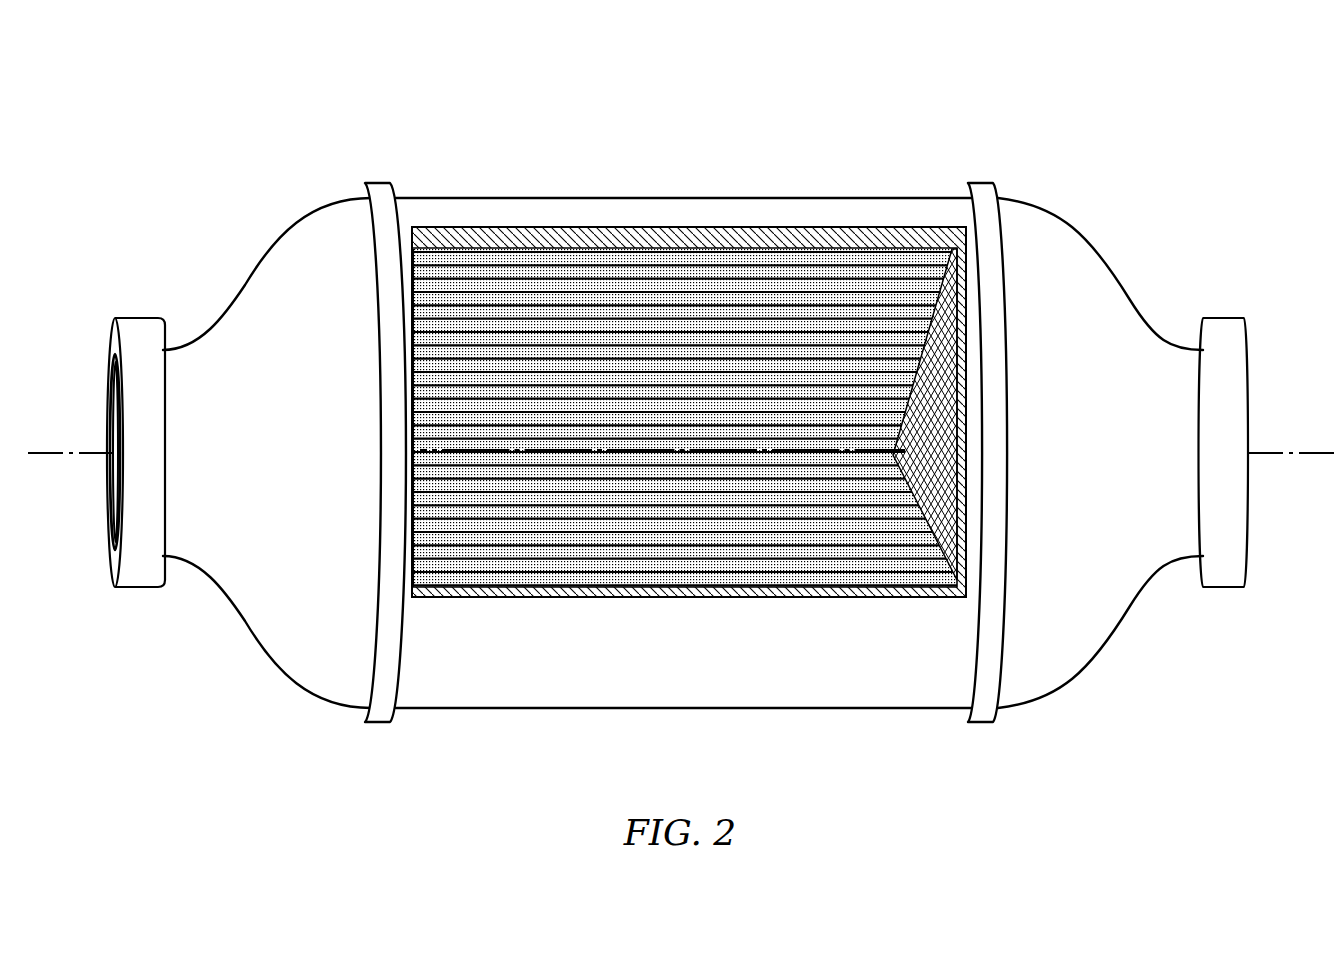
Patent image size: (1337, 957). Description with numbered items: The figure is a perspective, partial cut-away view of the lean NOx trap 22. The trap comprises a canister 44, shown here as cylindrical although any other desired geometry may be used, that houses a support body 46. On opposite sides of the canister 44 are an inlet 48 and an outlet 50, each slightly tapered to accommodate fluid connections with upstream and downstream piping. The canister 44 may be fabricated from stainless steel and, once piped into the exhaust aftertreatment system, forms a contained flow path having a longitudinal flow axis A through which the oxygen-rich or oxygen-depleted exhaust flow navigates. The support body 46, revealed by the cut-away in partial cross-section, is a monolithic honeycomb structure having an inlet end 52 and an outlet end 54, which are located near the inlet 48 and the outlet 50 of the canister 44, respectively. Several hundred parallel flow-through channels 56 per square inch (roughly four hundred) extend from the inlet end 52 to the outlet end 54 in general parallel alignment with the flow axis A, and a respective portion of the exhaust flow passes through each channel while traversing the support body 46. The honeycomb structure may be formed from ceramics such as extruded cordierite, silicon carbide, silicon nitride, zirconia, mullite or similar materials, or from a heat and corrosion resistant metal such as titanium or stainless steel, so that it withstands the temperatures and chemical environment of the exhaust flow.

The lean NOx trap 22 is at (1187, 92).
The canister 44 is at (1163, 203).
The support body 46 is at (780, 143).
The inlet 48 is at (1318, 312).
The outlet 50 is at (107, 389).
The inlet end 52 is at (957, 297).
The outlet end 54 is at (424, 308).
The flow-through channels 56 is at (668, 258).
The longitudinal flow axis A is at (785, 630).